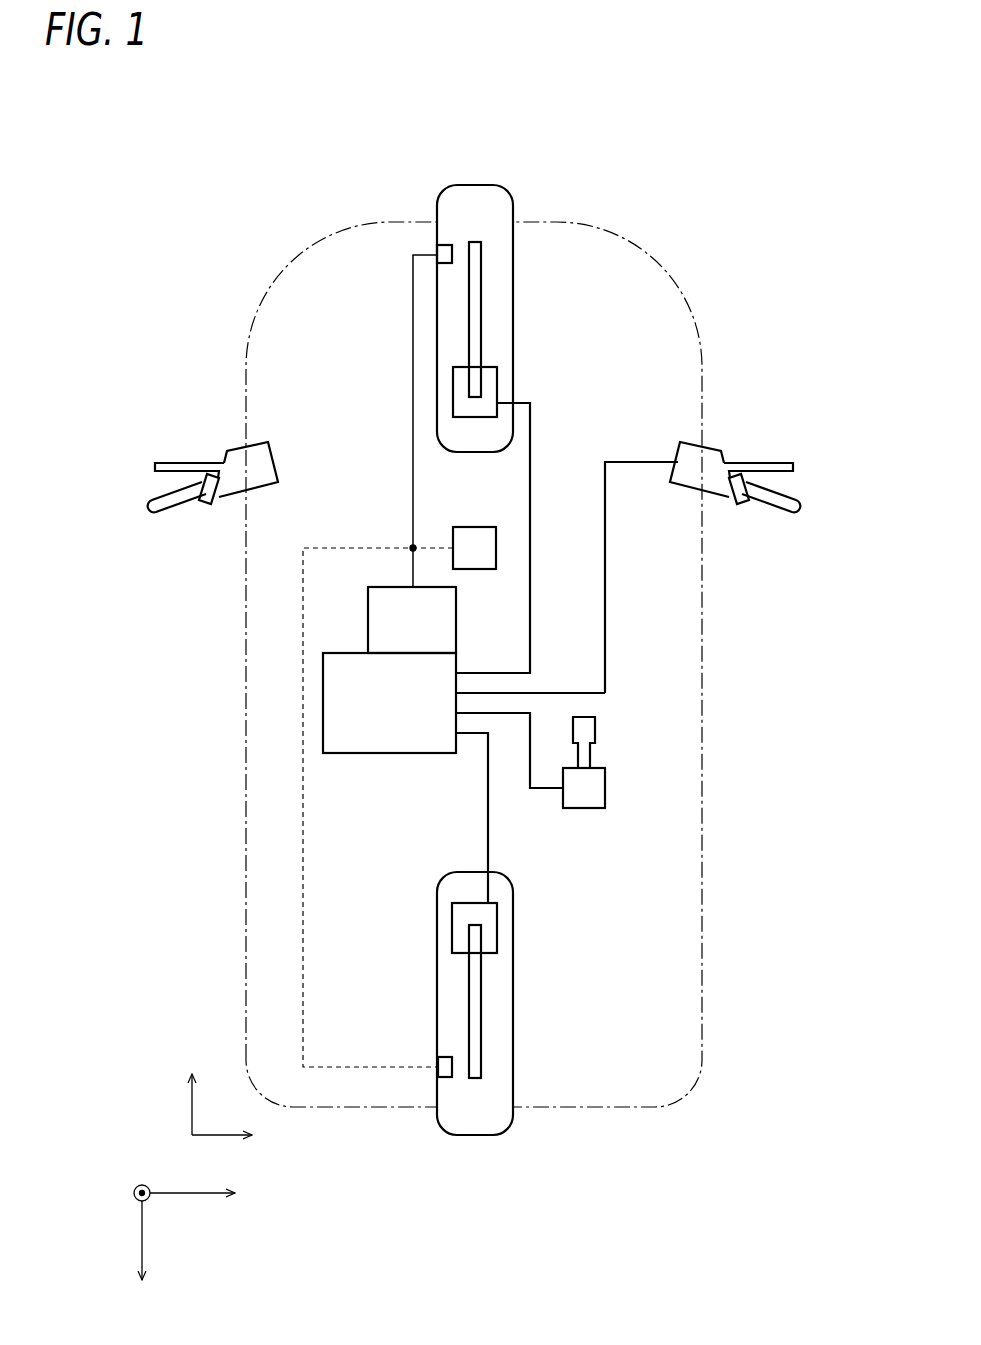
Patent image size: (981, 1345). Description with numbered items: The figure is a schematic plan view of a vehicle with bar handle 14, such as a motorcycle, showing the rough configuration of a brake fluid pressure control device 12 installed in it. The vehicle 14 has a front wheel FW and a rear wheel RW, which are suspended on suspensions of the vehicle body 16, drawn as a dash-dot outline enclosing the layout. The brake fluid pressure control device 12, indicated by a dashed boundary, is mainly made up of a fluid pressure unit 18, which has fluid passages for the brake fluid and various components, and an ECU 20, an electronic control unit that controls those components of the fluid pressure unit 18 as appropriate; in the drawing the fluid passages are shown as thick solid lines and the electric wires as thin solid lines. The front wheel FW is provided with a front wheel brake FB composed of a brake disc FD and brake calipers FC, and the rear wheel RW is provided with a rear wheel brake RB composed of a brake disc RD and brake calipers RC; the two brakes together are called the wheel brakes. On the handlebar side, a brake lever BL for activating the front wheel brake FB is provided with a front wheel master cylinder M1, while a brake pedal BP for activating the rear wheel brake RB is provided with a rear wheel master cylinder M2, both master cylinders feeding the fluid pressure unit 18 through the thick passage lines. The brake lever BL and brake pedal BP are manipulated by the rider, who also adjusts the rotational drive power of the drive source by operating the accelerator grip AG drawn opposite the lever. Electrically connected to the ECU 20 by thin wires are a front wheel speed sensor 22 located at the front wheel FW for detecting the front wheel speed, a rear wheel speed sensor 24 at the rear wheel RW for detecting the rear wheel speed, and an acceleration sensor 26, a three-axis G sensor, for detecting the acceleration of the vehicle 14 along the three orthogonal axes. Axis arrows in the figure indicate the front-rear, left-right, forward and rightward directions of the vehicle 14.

The vehicle with bar handle 14 is at (284, 147).
The vehicle body 16 is at (663, 265).
The brake fluid pressure control device 12 is at (361, 571).
The fluid pressure unit 18 is at (412, 755).
The ECU 20 is at (368, 619).
The front wheel speed sensor 22 is at (446, 264).
The rear wheel speed sensor 24 is at (446, 1057).
The acceleration sensor 26 is at (474, 527).
The front wheel FW is at (514, 195).
The rear wheel RW is at (513, 1127).
The front wheel brake FB is at (535, 329).
The rear wheel brake RB is at (535, 990).
The brake disc FD is at (482, 323).
The brake disc RD is at (482, 997).
The brake calipers FC is at (498, 367).
The brake calipers RC is at (497, 953).
The front wheel master cylinder M1 is at (712, 452).
The rear wheel master cylinder M2 is at (606, 787).
The brake lever BL is at (763, 463).
The brake pedal BP is at (597, 729).
The accelerator grip AG is at (773, 512).